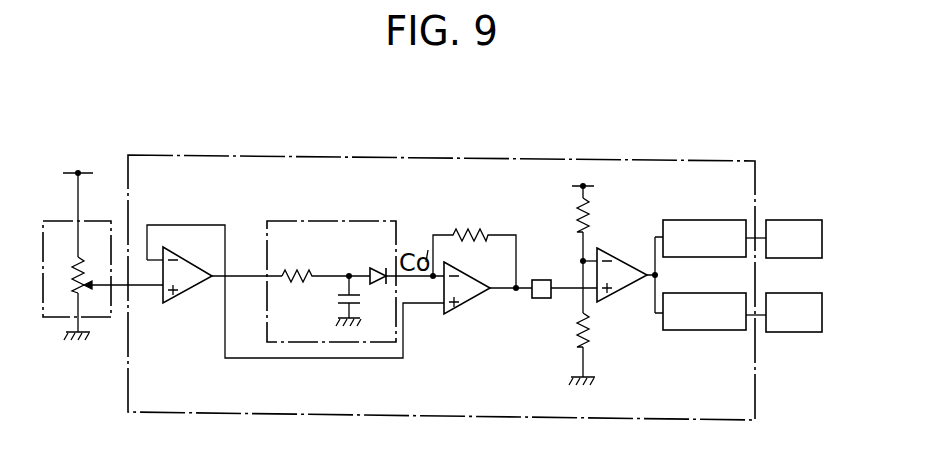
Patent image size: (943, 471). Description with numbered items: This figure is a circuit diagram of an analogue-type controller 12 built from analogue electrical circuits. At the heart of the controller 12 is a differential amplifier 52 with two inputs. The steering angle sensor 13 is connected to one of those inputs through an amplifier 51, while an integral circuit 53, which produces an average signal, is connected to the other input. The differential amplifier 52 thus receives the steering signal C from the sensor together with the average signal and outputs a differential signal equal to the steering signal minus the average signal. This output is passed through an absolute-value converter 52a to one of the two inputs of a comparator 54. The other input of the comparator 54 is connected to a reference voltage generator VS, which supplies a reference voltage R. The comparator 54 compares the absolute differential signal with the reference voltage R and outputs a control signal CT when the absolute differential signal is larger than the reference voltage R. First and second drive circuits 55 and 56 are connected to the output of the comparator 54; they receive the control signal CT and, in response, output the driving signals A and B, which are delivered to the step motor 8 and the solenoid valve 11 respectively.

The step motor 8 is at (795, 220).
The solenoid valve 11 is at (790, 333).
The controller 12 is at (497, 157).
The steering angle sensor 13 is at (94, 221).
The amplifier 51 is at (187, 291).
The differential amplifier 52 is at (462, 305).
The absolute-value converter 52a is at (542, 298).
The integral circuit 53 is at (330, 221).
The comparator 54 is at (622, 298).
The first drive circuit 55 is at (686, 220).
The second drive circuit 56 is at (690, 330).
The steering signal C is at (120, 292).
The reference voltage generator VS is at (577, 210).
The reference voltage R is at (600, 221).
The control signal CT is at (635, 254).
The driving signal A is at (758, 238).
The driving signal B is at (758, 316).